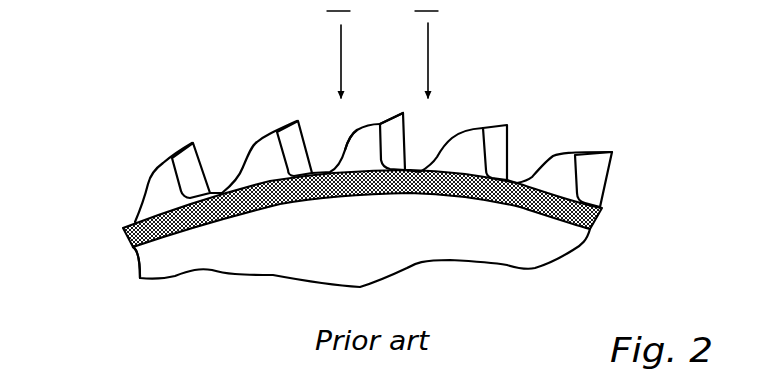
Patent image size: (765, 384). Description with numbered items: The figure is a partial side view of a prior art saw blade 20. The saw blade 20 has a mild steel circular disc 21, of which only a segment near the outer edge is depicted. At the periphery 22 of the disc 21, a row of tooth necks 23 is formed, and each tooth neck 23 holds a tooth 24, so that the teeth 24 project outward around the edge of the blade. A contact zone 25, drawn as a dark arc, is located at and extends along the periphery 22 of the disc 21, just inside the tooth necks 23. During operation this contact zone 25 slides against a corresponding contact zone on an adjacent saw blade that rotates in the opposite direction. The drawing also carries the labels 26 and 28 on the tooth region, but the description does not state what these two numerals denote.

The saw blade 20 is at (128, 150).
The mild steel circular disc 21 is at (505, 253).
The periphery 22 is at (152, 260).
The tooth necks 23 is at (262, 138).
The teeth 24 is at (285, 123).
The contact zone 25 is at (598, 218).
The cutting edge 26 is at (393, 123).
The tooth back surface 28 is at (365, 137).